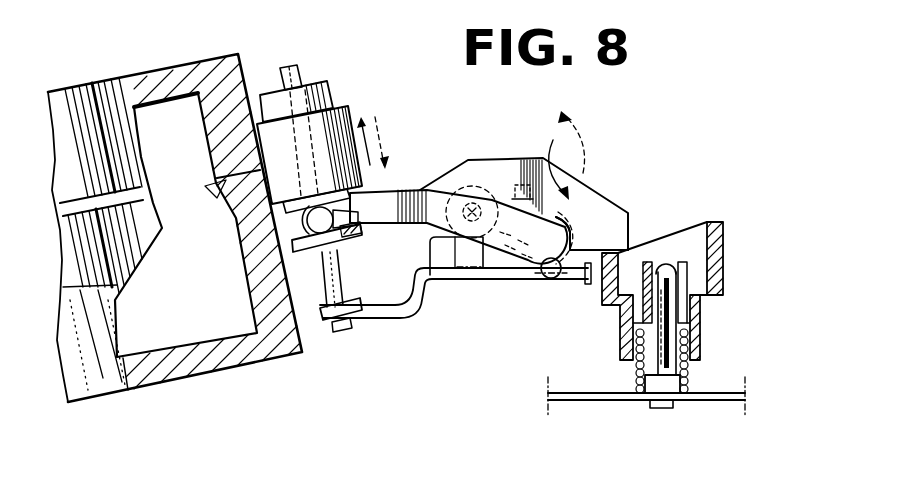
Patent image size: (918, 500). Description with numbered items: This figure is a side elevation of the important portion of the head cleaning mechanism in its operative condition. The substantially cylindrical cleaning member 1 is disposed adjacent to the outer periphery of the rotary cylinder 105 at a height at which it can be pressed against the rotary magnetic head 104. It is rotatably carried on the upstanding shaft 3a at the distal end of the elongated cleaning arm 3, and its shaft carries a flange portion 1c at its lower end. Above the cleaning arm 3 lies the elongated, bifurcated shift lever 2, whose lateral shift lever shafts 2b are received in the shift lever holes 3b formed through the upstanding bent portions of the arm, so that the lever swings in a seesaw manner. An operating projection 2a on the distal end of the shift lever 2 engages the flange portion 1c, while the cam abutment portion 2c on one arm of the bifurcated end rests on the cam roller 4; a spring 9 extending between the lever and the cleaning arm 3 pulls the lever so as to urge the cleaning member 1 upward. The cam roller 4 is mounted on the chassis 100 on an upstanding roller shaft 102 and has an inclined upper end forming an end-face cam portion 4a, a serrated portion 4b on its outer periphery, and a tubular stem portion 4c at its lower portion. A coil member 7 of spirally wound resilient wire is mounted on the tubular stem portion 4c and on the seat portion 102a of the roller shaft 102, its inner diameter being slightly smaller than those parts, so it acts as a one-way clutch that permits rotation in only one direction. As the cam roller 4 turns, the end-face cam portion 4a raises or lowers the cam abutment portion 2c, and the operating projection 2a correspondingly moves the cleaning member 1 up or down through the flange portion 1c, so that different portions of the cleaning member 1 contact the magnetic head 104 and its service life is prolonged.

The rotary cylinder 105 is at (192, 63).
The magnetic head 104 is at (218, 196).
The flange portion 1c is at (247, 250).
The cleaning member 1 is at (349, 108).
The shift lever 2 is at (402, 190).
The operating projection 2a is at (333, 230).
The shift lever shafts 2b is at (496, 222).
The cam abutment portion 2c is at (572, 232).
The cleaning arm 3 is at (437, 283).
The upstanding shaft 3a is at (345, 277).
The shift lever holes 3b is at (470, 205).
The cam roller 4 is at (726, 248).
The end-face cam portion 4a is at (672, 234).
The serrated portion 4b is at (703, 330).
The tubular stem portion 4c is at (620, 350).
The coil member 7 is at (686, 380).
The spring 9 is at (591, 248).
The chassis 100 is at (582, 401).
The roller shaft 102 is at (660, 305).
The seat portion 102a is at (660, 409).